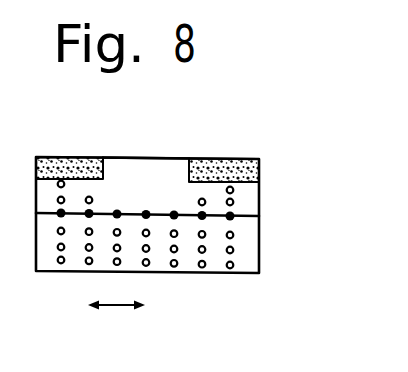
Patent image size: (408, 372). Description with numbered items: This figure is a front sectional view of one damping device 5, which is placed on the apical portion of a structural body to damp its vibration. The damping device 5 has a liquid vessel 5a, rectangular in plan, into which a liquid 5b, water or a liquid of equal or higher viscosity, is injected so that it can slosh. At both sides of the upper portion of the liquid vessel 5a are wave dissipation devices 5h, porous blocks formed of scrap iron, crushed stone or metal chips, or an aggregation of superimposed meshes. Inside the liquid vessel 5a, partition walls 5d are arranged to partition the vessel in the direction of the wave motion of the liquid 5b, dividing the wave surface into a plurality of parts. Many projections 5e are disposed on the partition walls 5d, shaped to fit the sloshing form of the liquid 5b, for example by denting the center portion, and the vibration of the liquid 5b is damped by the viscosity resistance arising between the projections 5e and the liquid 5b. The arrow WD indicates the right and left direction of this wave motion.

The damping device 5 is at (298, 157).
The liquid vessel 5a is at (259, 210).
The liquid 5b is at (245, 214).
The partition walls 5d is at (173, 168).
The projections 5e is at (62, 183).
The wave dissipation devices 5h is at (52, 157).
The width direction WD is at (116, 323).